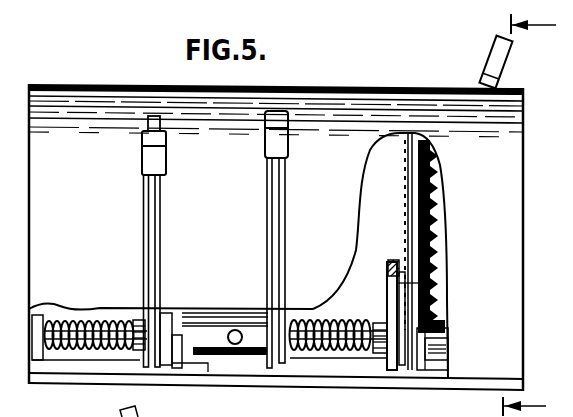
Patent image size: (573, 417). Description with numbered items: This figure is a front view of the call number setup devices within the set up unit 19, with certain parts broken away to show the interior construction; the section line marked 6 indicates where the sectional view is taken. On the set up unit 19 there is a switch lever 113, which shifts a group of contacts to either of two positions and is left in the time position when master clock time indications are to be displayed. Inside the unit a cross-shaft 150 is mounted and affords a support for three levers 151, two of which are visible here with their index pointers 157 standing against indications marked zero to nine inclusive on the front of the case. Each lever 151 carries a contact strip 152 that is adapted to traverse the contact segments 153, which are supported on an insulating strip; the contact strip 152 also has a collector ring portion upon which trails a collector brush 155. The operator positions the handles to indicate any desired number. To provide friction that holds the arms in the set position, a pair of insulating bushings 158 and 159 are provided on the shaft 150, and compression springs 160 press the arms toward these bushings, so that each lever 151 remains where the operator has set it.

The set up unit 19 is at (380, 84).
The switch lever 113 is at (506, 60).
The section line 6- 6 is at (521, 215).
The lever 151 is at (158, 160).
The index pointer 157 is at (292, 150).
The insulating bushing 159 is at (252, 356).
The cross-shaft 150 is at (75, 345).
The compression spring 160 is at (93, 320).
The collector brush 155 is at (407, 345).
The contact strip 152 is at (395, 262).
The contact segment 153 is at (408, 178).
The insulating bushing 158 is at (437, 333).